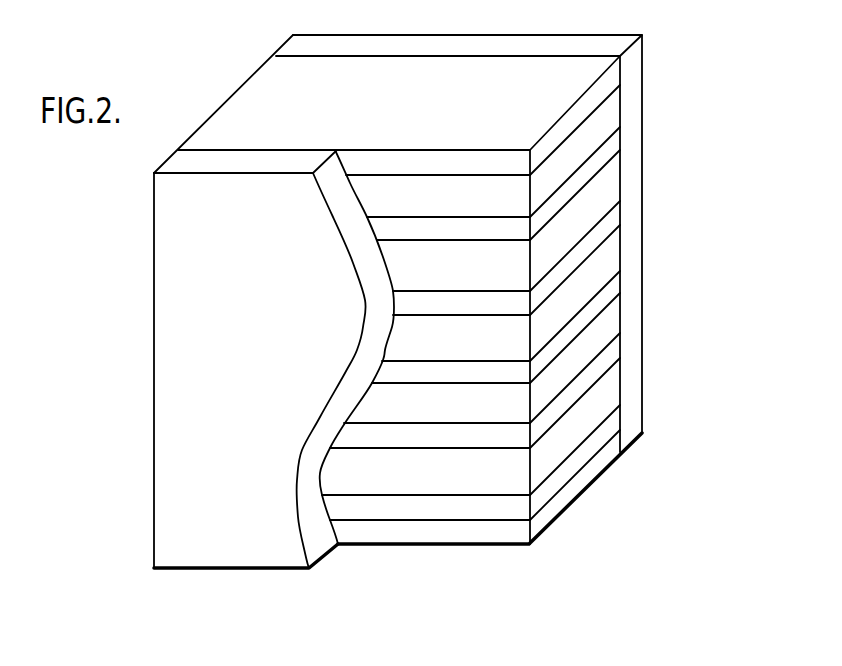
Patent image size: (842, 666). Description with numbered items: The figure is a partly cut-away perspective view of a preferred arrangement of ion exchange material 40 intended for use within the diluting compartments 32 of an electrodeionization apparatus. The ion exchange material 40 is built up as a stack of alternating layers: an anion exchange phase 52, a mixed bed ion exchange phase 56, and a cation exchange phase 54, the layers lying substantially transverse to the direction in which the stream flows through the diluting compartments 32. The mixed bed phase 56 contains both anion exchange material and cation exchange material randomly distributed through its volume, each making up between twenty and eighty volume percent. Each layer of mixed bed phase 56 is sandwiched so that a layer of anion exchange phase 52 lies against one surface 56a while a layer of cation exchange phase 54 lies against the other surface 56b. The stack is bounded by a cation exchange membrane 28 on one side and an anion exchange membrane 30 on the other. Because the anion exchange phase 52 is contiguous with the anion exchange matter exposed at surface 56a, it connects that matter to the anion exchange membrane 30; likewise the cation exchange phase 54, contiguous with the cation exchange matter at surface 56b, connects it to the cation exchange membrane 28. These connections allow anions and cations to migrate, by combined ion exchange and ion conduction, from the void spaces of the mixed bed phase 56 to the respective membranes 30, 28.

The cation exchange membrane 28 is at (170, 412).
The anion exchange membrane 30 is at (553, 43).
The diluting compartment 32 is at (262, 47).
The ion exchange material 40 is at (508, 553).
The anion exchange phase 52 is at (462, 162).
The cation exchange phase 54 is at (490, 230).
The mixed bed ion exchange phase 56 is at (452, 211).
The surface of mixed bed phase 56a is at (577, 127).
The other surface of mixed bed phase 56b is at (600, 150).